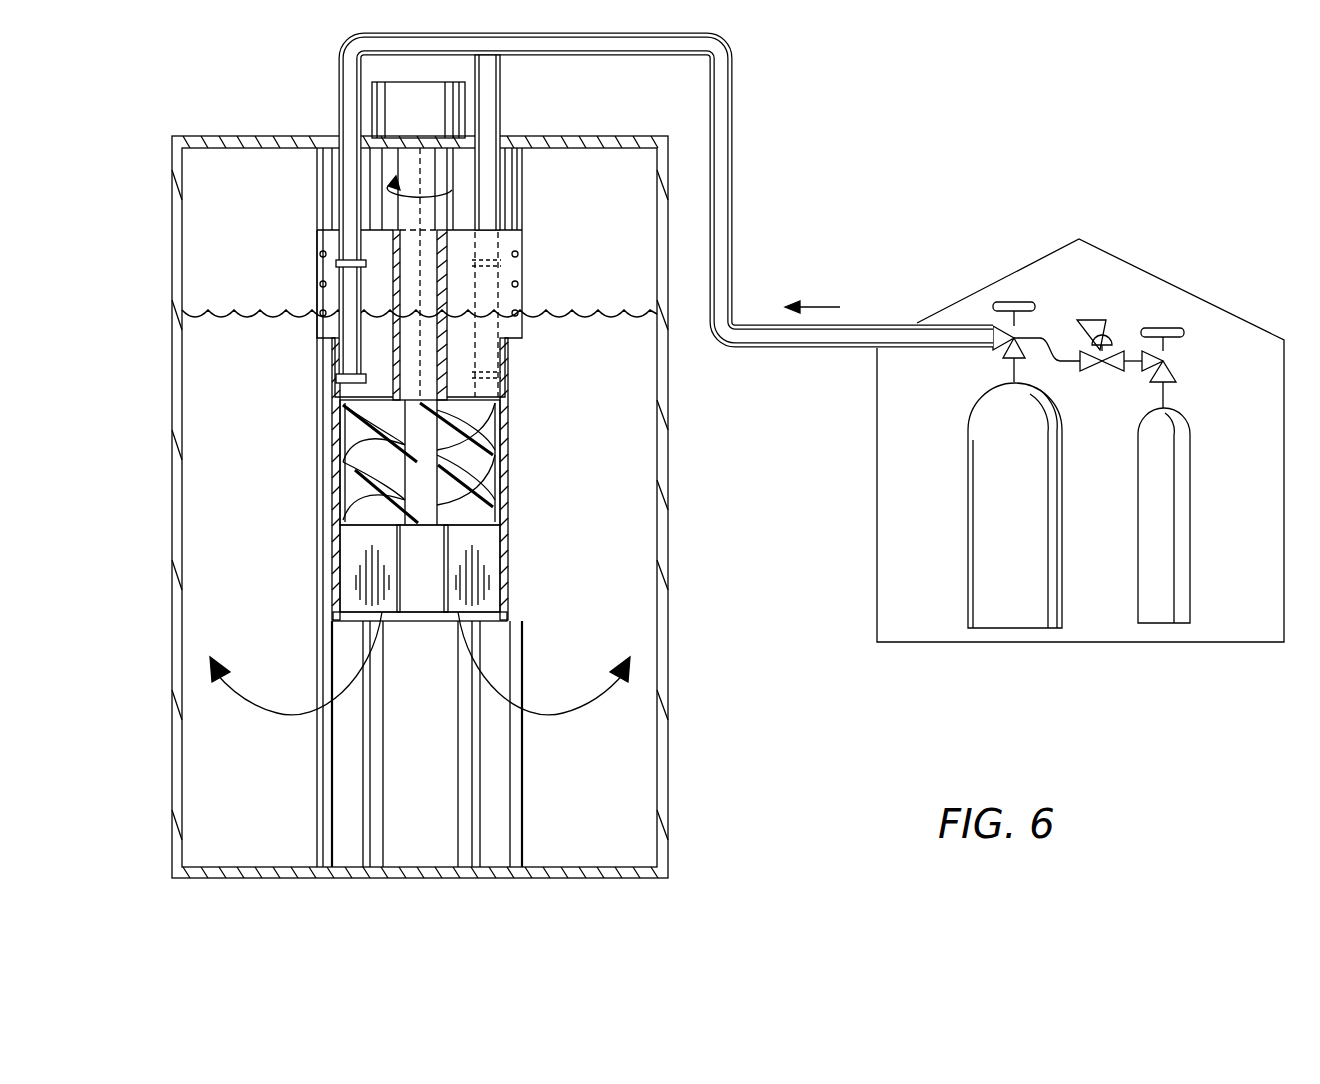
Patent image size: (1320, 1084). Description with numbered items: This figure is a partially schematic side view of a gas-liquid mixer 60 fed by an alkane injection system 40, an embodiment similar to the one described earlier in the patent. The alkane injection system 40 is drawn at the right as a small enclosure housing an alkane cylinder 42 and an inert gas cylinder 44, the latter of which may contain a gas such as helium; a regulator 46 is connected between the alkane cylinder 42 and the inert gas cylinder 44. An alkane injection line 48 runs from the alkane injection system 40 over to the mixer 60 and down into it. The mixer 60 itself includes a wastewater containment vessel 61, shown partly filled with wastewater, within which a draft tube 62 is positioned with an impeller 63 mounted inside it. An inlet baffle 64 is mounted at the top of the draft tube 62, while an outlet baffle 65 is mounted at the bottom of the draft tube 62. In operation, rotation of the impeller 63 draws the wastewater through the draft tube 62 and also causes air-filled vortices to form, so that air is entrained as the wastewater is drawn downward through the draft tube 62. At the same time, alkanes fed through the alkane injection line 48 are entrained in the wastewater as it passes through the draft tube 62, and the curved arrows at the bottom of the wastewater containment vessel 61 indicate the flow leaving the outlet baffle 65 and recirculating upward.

The alkane injection system 40 is at (1088, 216).
The alkane cylinder 42 is at (985, 555).
The inert gas cylinder 44 is at (1177, 545).
The regulator 46 is at (1102, 328).
The alkane injection line 48 is at (727, 125).
The gas-liquid mixer 60 is at (548, 118).
The wastewater containment vessel 61 is at (665, 527).
The draft tube 62 is at (508, 442).
The impeller 63 is at (487, 468).
The inlet baffle 64 is at (500, 268).
The outlet baffle 65 is at (497, 563).